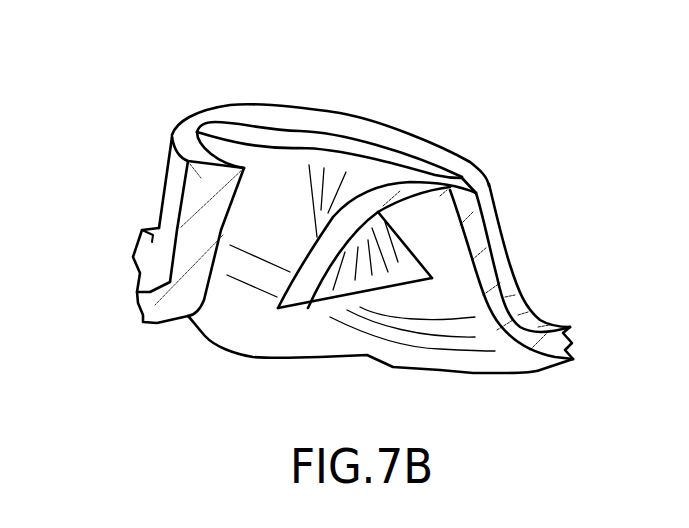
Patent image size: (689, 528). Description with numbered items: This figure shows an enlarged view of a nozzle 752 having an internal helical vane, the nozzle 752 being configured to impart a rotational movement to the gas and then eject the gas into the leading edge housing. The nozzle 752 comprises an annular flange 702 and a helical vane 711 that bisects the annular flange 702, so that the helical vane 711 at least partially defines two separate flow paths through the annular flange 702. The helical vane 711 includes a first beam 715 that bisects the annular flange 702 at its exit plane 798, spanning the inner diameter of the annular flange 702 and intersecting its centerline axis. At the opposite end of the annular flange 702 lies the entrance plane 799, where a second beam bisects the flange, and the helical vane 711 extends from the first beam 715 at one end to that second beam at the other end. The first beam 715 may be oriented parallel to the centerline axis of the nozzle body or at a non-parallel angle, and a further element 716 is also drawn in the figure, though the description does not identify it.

The manufactured component 752 is at (534, 88).
The rim 798 is at (150, 123).
The wall 702 is at (168, 185).
The broken edge 799 is at (137, 275).
The slot opening 715 is at (285, 145).
The internal wedge feature 711 is at (362, 208).
The base 716 is at (303, 309).